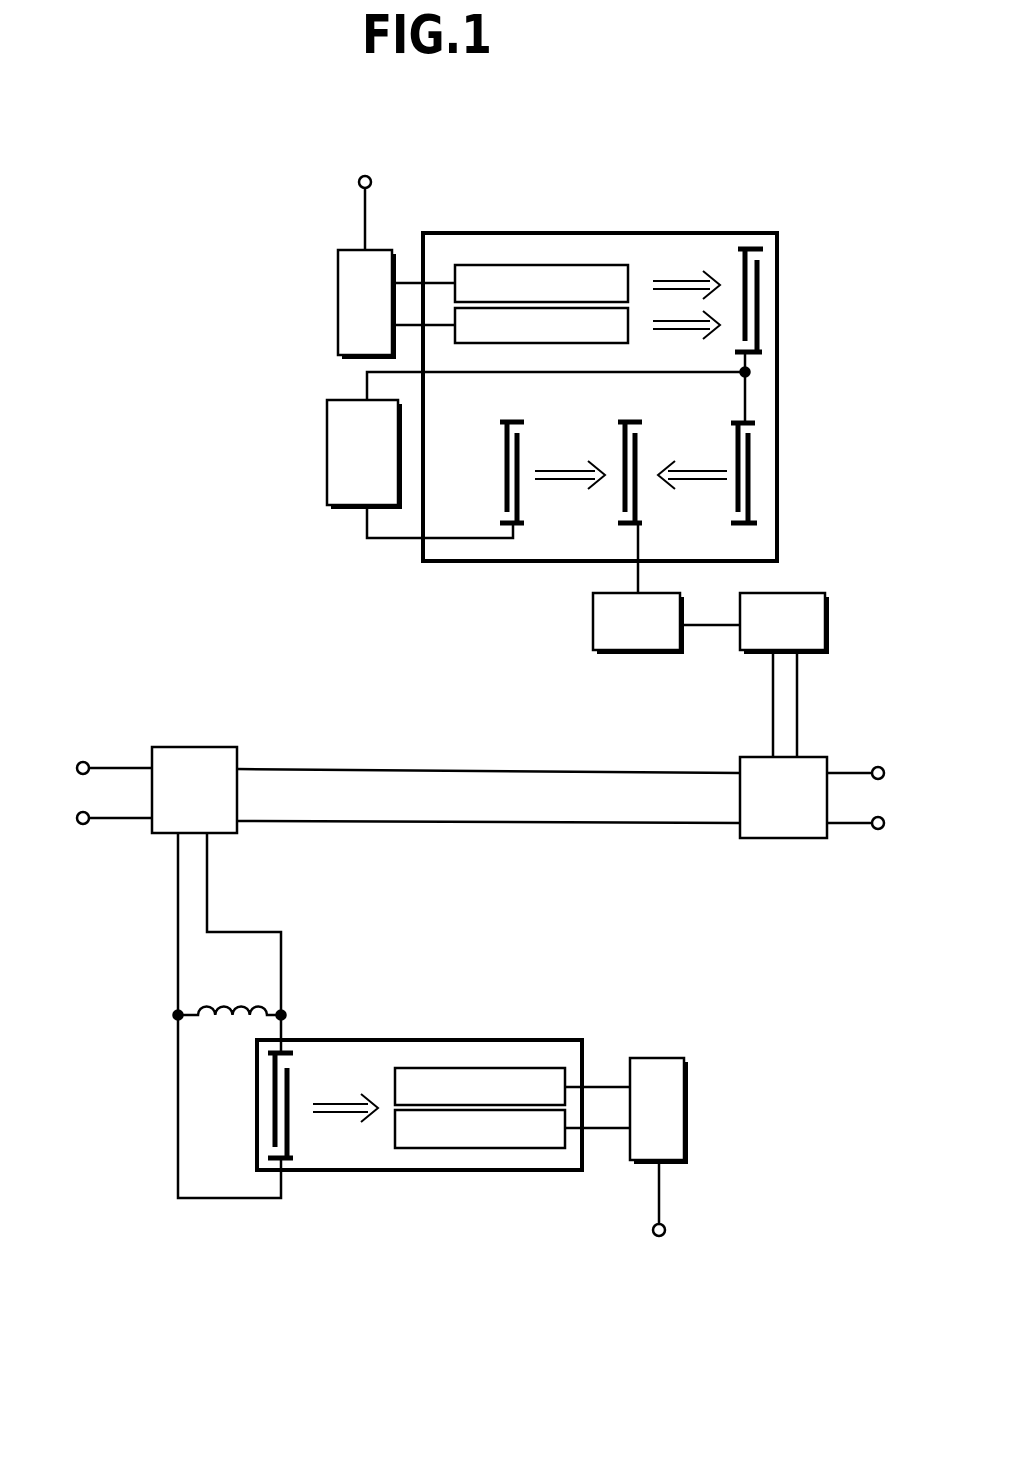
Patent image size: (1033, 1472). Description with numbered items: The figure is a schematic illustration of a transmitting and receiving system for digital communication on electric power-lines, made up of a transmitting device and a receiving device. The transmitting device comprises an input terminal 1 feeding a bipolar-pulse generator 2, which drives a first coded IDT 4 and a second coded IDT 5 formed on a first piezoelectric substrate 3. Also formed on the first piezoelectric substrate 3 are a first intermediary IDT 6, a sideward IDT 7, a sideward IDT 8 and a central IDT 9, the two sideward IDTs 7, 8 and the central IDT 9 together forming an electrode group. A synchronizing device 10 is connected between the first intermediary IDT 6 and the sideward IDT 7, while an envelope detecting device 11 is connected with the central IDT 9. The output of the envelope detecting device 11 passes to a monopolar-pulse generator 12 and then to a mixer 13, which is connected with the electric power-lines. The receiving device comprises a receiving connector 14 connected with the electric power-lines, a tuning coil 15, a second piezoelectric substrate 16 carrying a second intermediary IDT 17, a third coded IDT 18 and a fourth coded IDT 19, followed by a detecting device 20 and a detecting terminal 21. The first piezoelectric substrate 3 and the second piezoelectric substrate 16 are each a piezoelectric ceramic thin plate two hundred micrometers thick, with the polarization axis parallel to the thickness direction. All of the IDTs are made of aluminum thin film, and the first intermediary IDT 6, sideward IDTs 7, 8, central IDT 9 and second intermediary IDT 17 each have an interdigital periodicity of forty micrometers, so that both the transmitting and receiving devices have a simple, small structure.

The input terminal 1 is at (238, 188).
The bipolar-pulse generator 2 is at (305, 290).
The first piezoelectric substrate 3 is at (765, 412).
The first coded IDT 4 is at (538, 285).
The second coded IDT 5 is at (485, 327).
The first intermediary IDT 6 is at (753, 285).
The sideward IDT 7 is at (500, 457).
The sideward IDT 8 is at (732, 447).
The central IDT 9 is at (618, 492).
The synchronizing device 10 is at (298, 485).
The envelope detecting device 11 is at (543, 625).
The monopolar-pulse generator 12 is at (718, 708).
The mixer 13 is at (843, 745).
The receiving connector 14 is at (205, 727).
The tuning coil 15 is at (230, 987).
The second piezoelectric substrate 16 is at (475, 1162).
The second intermediary IDT 17 is at (288, 1128).
The third coded IDT 18 is at (470, 1092).
The fourth coded IDT 19 is at (418, 1130).
The detecting device 20 is at (713, 1147).
The detecting terminal 21 is at (748, 1243).